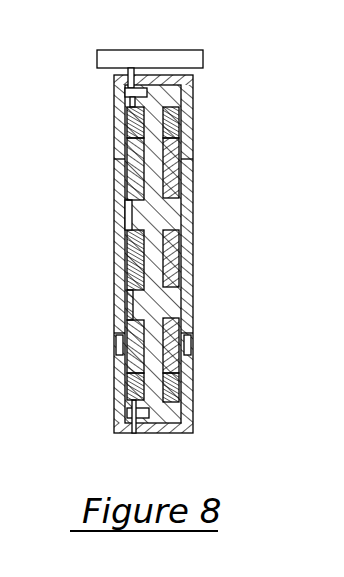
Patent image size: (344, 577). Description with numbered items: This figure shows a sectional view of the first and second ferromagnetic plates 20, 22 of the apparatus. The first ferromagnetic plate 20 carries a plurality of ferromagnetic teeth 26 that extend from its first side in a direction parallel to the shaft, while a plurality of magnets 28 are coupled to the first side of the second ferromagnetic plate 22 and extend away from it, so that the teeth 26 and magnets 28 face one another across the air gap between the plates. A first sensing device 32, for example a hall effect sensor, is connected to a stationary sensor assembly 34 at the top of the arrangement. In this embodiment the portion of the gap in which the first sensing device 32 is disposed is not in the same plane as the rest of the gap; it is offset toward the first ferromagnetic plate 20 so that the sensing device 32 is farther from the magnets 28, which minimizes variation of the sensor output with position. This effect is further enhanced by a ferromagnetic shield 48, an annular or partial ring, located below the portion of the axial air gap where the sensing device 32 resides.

The first ferromagnetic plate 20 is at (104, 402).
The second ferromagnetic plate 22 is at (212, 400).
The ferromagnetic teeth 26 is at (125, 178).
The magnets 28 is at (193, 178).
The first sensing device 32 is at (127, 72).
The stationary sensor assembly 34 is at (203, 58).
The ferromagnetic shield 48 is at (142, 100).